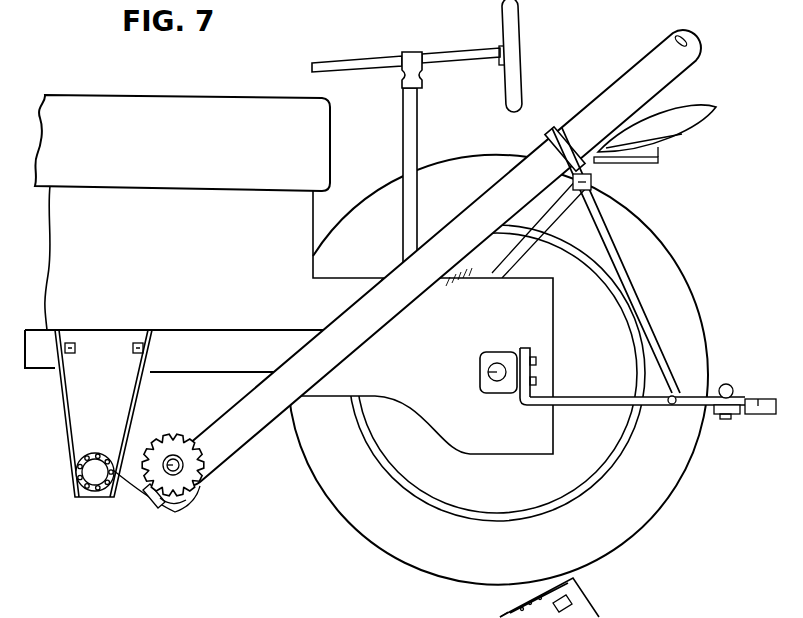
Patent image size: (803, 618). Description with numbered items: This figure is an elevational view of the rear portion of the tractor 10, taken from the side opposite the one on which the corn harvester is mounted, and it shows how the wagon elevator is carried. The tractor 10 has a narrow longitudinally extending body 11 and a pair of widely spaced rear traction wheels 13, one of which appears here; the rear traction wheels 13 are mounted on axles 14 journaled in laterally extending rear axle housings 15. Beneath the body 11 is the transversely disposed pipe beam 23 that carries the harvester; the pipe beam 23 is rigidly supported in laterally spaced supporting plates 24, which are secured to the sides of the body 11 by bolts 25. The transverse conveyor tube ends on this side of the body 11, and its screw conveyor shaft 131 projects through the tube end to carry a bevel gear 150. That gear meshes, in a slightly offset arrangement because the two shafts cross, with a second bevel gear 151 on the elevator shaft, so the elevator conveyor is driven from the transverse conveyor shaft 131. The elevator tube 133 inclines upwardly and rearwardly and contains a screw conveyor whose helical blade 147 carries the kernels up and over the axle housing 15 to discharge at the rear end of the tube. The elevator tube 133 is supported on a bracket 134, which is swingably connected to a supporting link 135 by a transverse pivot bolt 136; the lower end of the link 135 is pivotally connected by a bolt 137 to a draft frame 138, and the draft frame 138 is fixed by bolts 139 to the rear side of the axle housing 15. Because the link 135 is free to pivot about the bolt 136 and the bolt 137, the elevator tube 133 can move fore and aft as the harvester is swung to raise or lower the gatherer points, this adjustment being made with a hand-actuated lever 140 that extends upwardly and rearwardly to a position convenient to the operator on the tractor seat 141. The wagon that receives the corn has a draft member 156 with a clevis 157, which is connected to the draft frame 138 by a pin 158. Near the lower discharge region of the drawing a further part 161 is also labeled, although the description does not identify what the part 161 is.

The tractor 10 is at (92, 88).
The body 11 is at (140, 152).
The rear traction wheels 13 is at (673, 477).
The axles 14 is at (481, 371).
The rear axle housings 15 is at (493, 352).
The pipe beam 23 is at (77, 474).
The supporting plates 24 is at (107, 412).
The bolts 25 is at (137, 343).
The shaft 131 is at (184, 467).
The elevator tube 133 is at (337, 347).
The bracket 134 is at (556, 132).
The supporting link 135 is at (623, 283).
The pivot bolt 136 is at (592, 183).
The bolt 137 is at (672, 405).
The draft frame 138 is at (608, 406).
The bolts 139 is at (532, 348).
The hand-actuated lever 140 is at (145, 503).
The tractor seat 141 is at (682, 132).
The helical blade 147 is at (586, 607).
The bevel gear 150 is at (180, 434).
The bevel gear 151 is at (174, 509).
The draft member 156 is at (752, 415).
The clevis 157 is at (717, 420).
The pin 158 is at (726, 383).
The plate 161 is at (498, 615).